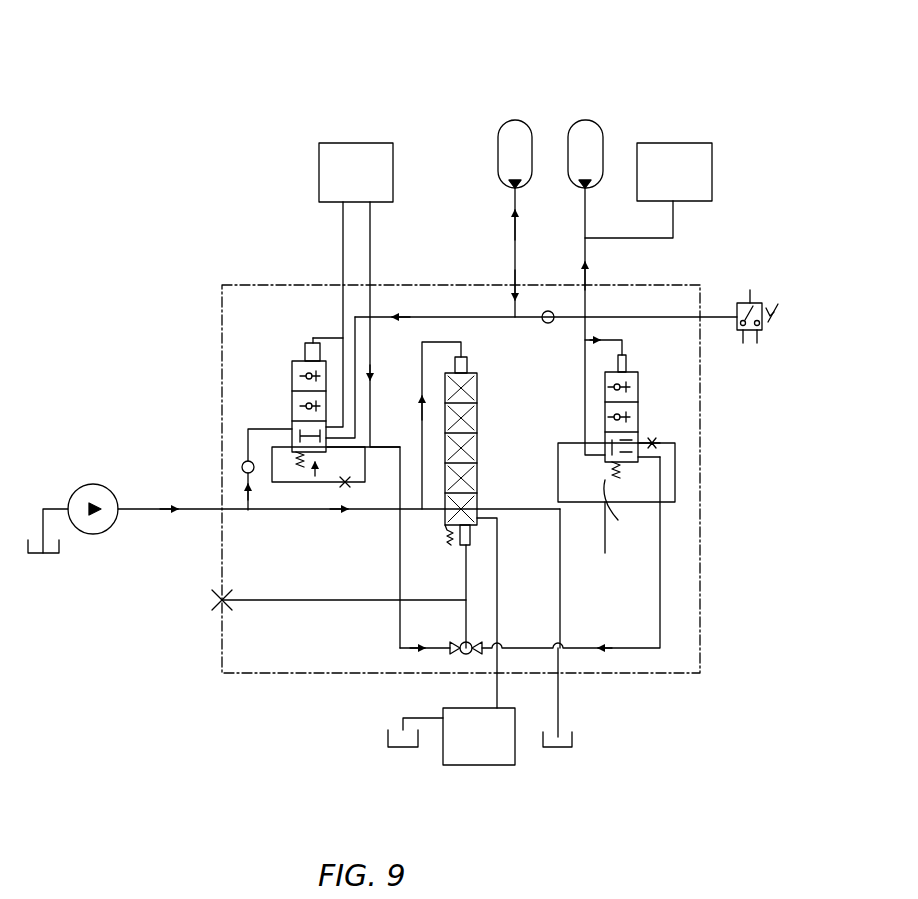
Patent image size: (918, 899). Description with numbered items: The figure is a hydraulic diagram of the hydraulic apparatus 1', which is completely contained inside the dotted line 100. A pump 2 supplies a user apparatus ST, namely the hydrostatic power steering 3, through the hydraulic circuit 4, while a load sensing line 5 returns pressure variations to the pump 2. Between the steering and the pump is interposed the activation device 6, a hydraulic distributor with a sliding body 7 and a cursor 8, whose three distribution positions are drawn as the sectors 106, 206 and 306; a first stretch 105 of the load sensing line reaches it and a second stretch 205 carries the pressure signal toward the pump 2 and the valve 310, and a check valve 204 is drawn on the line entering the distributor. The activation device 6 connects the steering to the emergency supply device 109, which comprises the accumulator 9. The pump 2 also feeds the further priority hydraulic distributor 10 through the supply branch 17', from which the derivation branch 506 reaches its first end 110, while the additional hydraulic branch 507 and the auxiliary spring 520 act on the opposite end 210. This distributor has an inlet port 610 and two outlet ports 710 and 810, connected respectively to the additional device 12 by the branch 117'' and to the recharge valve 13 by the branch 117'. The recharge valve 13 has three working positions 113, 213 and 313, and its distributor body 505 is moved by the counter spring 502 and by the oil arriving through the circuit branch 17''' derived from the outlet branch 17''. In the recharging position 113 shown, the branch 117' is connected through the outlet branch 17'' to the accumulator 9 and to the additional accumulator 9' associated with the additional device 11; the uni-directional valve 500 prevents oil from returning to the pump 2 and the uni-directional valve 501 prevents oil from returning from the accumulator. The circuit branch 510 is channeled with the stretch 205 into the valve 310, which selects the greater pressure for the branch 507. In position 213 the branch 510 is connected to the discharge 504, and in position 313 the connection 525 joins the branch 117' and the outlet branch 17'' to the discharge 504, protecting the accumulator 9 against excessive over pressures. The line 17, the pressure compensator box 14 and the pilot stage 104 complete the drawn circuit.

The hydraulic apparatus 1' is at (263, 192).
The pump 2 is at (93, 480).
The hydrostatic power steering 3 is at (340, 165).
The hydraulic circuit 4 is at (343, 225).
The load sensing line 5 is at (372, 225).
The activation device 6 is at (290, 338).
The sliding body 7 is at (282, 375).
The cursor 8 is at (282, 400).
The accumulator 9 is at (515, 193).
The additional accumulator 9' is at (599, 195).
The further priority hydraulic distributor 10 is at (484, 438).
The additional device 11 is at (667, 162).
The additional device 12 is at (470, 752).
The recharge valve 13 is at (598, 418).
The pressure compensator 14 is at (300, 485).
The pressure line 17 is at (531, 340).
The supply branch 17' is at (348, 558).
The outlet branch 17'' is at (614, 280).
The circuit branch 17''' is at (690, 278).
The dotted line 100 is at (237, 285).
The pilot stage 104 is at (308, 352).
The first stretch of the load sensing line 105 is at (378, 390).
The first position sector 106 is at (282, 490).
The emergency supply device 109 is at (541, 116).
The first end 110 is at (465, 363).
The recharging position 113 is at (655, 450).
The supply branch 117' is at (340, 464).
The branch 117'' is at (542, 746).
The check valve 204 is at (240, 467).
The second stretch of the load sensing line 205 is at (400, 652).
The second position sector 206 is at (282, 413).
The opposite end 210 is at (358, 596).
The standby position 213 is at (640, 416).
The third position sector 306 is at (290, 366).
The valve 310 is at (462, 660).
The protection position 313 is at (625, 365).
The uni-directional valve 500 is at (623, 540).
The uni-directional valve 501 is at (548, 310).
The counter spring 502 is at (633, 509).
The discharge 504 is at (575, 737).
The distributor body 505 is at (600, 400).
The derivation branch 506 is at (420, 378).
The additional hydraulic branch 507 is at (462, 583).
The circuit branch 510 is at (525, 645).
The auxiliary spring 520 is at (448, 545).
The connection 525 is at (640, 388).
The inlet port 610 is at (440, 518).
The outlet port 710 is at (499, 520).
The outlet port 810 is at (479, 505).
The user apparatus ST is at (394, 140).